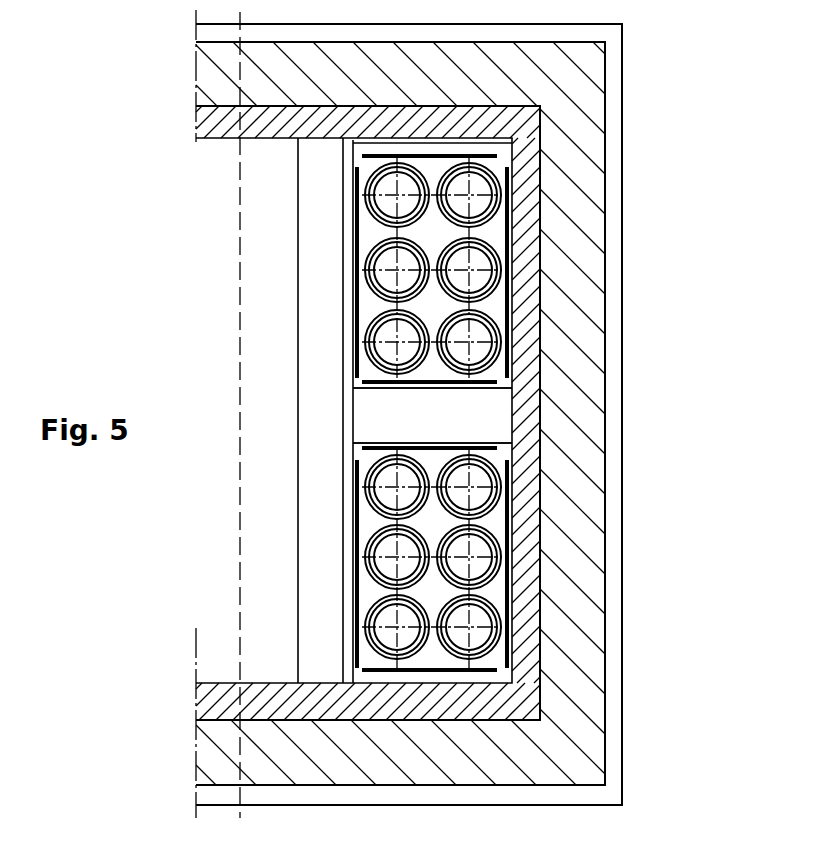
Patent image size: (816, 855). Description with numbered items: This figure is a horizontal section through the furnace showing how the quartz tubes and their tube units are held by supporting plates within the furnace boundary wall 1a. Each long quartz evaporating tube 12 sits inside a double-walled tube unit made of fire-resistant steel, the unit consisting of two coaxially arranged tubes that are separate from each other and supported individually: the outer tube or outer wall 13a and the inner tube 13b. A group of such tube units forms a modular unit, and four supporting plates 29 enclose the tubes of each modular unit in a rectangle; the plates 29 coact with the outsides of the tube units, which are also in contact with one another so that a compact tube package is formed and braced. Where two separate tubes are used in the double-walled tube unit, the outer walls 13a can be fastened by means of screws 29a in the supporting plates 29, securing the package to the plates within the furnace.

The boundary wall of the furnace 1a is at (587, 400).
The quartz evaporating tube 12 is at (490, 322).
The outer tube 13a is at (485, 305).
The inner tube 13b is at (503, 330).
The supporting plate 29 is at (470, 386).
The screw 29a is at (420, 443).